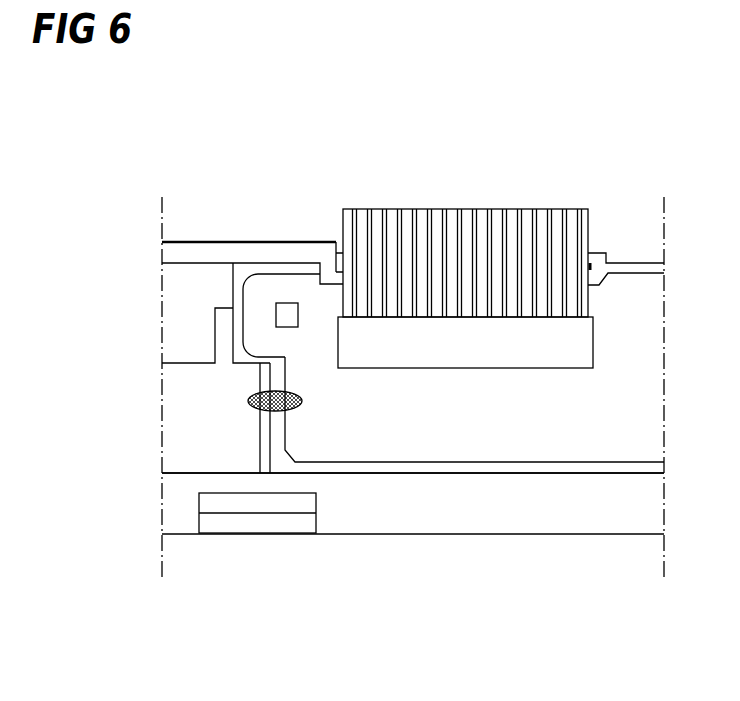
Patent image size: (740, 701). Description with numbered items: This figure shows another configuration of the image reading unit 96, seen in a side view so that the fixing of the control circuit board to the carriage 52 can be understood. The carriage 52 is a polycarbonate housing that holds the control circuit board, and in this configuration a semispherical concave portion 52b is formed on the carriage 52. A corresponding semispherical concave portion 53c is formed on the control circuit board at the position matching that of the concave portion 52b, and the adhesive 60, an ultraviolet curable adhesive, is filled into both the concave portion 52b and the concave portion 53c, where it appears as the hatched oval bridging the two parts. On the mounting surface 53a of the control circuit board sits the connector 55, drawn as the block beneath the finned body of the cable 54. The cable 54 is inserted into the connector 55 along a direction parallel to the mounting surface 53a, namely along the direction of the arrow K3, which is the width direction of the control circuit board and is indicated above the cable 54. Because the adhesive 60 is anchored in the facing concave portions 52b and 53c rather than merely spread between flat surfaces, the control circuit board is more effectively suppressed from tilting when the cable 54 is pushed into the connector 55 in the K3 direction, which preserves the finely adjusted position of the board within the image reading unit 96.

The image reading unit 96 is at (340, 131).
The carriage 52 is at (213, 241).
The semispherical concave portion 52b is at (252, 408).
The adhesive 60 is at (275, 412).
The semispherical concave portion 53c is at (293, 407).
The mounting surface 53a is at (442, 434).
The connector 55 is at (506, 353).
The cable 54 is at (540, 218).
The arrow K3 (third direction) K3 is at (466, 187).